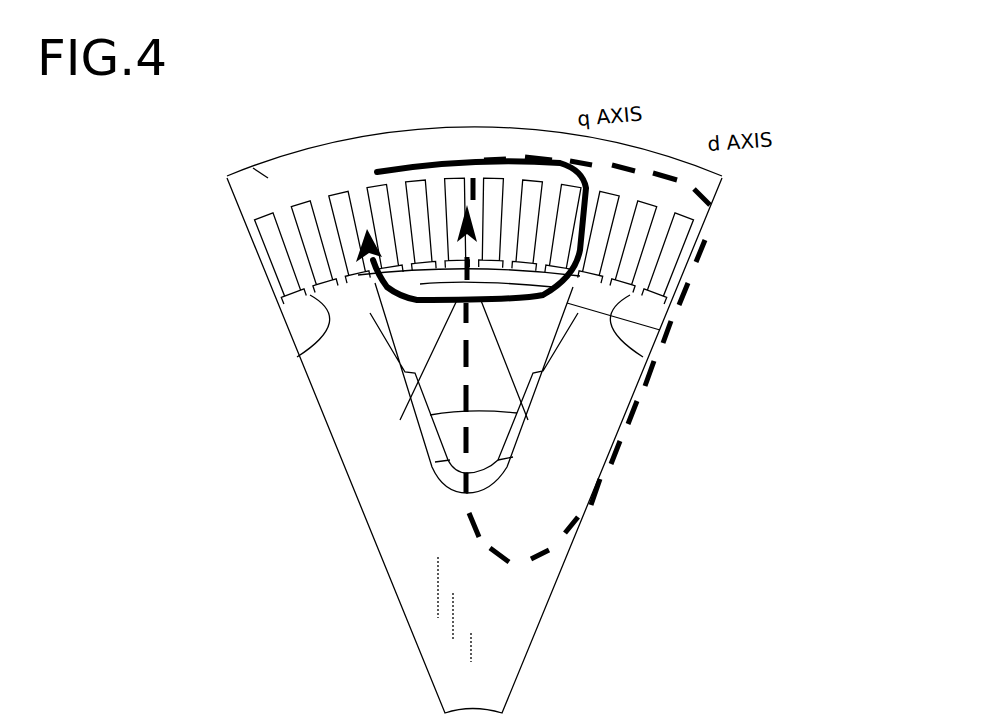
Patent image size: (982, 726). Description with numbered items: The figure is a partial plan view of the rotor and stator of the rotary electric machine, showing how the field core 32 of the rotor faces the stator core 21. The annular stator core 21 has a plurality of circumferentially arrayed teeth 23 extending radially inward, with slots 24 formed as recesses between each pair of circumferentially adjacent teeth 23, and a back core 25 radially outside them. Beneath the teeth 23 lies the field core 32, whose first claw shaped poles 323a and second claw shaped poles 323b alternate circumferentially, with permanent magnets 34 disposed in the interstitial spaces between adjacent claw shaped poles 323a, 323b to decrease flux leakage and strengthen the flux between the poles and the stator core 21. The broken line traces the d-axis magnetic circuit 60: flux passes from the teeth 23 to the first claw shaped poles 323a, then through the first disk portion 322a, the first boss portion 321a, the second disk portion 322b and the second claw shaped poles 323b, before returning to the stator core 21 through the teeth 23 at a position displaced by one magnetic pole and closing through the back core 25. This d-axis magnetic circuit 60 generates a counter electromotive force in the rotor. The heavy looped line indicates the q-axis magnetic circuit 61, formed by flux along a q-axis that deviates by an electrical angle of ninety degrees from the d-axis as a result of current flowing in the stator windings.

The stator core 21 is at (285, 148).
The back core 25 is at (253, 157).
The slots 24 is at (308, 227).
The teeth 23 is at (390, 338).
The field core 32 is at (400, 616).
The permanent magnets 34 is at (435, 336).
The first disk portion 322a is at (550, 450).
The second disk portion 322b is at (457, 397).
The first claw shaped poles 323a is at (350, 282).
The second claw shaped poles 323b is at (511, 200).
The first boss portion 321a is at (482, 652).
The d-axis magnetic circuit 60 is at (647, 414).
The q-axis magnetic circuit 61 is at (434, 152).